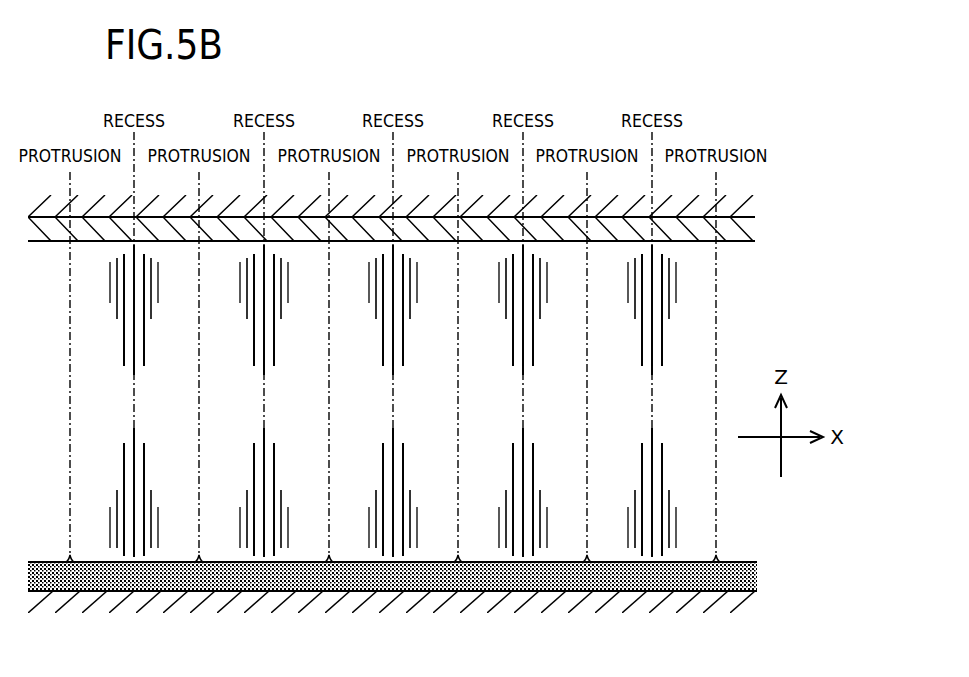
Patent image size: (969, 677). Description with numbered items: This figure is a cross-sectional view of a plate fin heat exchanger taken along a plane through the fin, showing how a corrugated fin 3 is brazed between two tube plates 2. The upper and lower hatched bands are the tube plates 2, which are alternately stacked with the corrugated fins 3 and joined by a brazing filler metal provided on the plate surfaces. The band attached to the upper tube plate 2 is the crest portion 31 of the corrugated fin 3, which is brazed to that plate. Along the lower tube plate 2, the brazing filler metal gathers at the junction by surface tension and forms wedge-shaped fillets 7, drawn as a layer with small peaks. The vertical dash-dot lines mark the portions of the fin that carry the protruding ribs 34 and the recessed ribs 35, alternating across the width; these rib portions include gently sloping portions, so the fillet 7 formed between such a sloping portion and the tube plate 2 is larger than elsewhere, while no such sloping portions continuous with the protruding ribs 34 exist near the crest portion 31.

The tube plate 2 is at (737, 205).
The corrugated fin 3 is at (429, 271).
The crest portion 31 is at (729, 241).
The fillet 7 is at (720, 556).
The protruding rib 34 is at (384, 338).
The recessed rib 35 is at (393, 322).